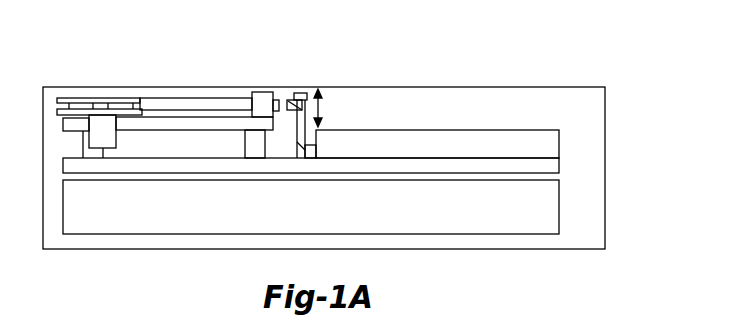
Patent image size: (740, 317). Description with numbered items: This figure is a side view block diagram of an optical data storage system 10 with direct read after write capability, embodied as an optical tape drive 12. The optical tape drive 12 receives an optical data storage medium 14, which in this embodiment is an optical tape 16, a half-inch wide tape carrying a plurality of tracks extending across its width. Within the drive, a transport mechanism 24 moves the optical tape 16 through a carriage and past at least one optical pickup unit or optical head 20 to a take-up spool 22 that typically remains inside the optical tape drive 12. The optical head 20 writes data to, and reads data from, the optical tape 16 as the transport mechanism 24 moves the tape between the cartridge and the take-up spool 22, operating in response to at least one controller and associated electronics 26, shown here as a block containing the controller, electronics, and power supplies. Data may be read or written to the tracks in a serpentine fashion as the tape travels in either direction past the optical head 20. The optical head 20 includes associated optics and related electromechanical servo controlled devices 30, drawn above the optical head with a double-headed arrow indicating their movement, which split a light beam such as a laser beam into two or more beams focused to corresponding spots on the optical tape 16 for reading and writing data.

The optical data storage system 10 is at (124, 40).
The optical tape drive 12 is at (605, 110).
The optical data storage medium 14 is at (219, 97).
The optical tape 16 is at (177, 103).
The optical head 20 is at (559, 145).
The take-up spool 22 is at (80, 97).
The transport mechanism 24 is at (131, 141).
The controller and associated electronics 26 is at (559, 209).
The associated optics and related electromechanical servo controlled devices 30 is at (296, 84).